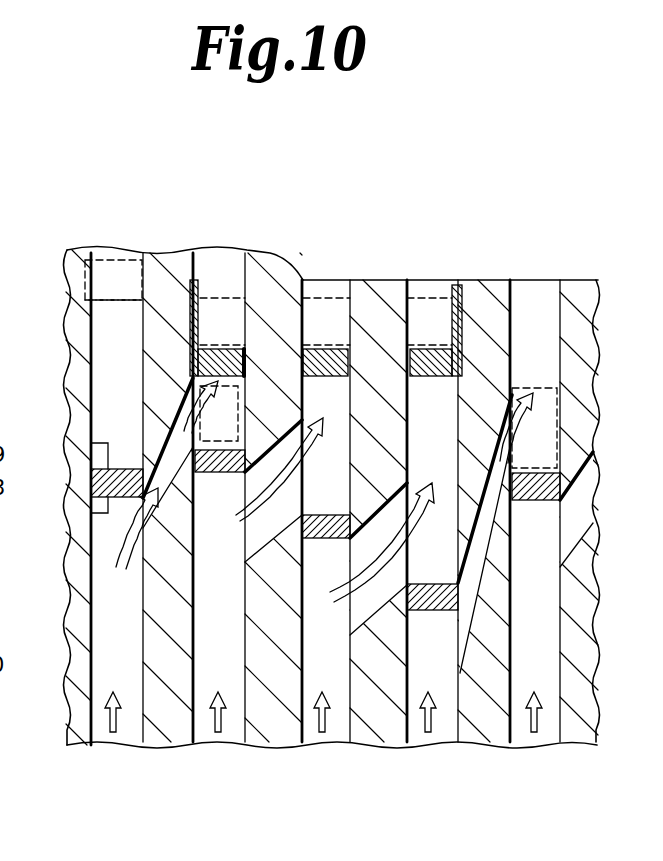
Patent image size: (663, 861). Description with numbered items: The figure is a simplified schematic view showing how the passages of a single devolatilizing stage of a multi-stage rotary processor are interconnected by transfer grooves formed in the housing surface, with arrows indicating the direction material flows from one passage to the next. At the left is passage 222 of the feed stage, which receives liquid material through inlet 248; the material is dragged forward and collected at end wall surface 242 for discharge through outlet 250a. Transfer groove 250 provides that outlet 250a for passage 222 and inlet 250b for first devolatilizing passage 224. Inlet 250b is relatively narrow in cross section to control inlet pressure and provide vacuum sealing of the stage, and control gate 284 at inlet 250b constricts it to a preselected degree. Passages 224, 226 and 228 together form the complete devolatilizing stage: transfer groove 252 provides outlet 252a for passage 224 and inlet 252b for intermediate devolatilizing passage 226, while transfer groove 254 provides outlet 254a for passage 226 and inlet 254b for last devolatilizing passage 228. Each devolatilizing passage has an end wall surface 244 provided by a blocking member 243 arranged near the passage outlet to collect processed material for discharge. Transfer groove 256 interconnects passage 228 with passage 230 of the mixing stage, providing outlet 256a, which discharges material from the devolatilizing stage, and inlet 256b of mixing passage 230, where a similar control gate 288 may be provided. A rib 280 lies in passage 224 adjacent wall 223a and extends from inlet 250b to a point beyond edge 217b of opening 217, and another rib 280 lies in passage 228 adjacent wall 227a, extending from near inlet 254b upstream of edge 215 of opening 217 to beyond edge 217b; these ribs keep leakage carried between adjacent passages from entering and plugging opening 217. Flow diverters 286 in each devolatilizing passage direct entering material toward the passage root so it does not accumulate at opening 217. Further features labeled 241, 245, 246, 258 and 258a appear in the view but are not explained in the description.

The edge of opening 215 is at (370, 283).
The opening 217 is at (340, 296).
The edge of opening 217b is at (342, 345).
The passage of the feed stage 222 is at (126, 743).
The wall of passage 224 223a is at (245, 633).
The first devolatilizing passage 224 is at (225, 738).
The intermediate devolatilizing passage 226 is at (335, 740).
The wall of passage 228 227a is at (438, 473).
The last devolatilizing passage 228 is at (435, 740).
The mixing passage 230 is at (548, 737).
The valve seat shoulder 241 is at (90, 443).
The end wall surface 242 is at (90, 513).
The blocking member 243 is at (205, 474).
The end wall surface 244 is at (198, 476).
The open position of plug 245 is at (528, 473).
The valve plug 246 is at (543, 502).
The inlet 248 is at (85, 294).
The transfer groove 250 is at (145, 487).
The outlet 250a is at (143, 500).
The inlet 250b is at (186, 402).
The transfer groove 252 is at (292, 526).
The outlet 252a is at (246, 543).
The inlet 252b is at (296, 446).
The transfer groove 254 is at (393, 593).
The outlet 254a is at (349, 614).
The inlet 254b is at (407, 518).
The transfer groove 256 is at (477, 588).
The outlet 256a is at (453, 652).
The inlet 256b is at (507, 433).
The outlet passage 258 is at (587, 502).
The outlet passage inlet 258a is at (562, 530).
The rib 280 is at (199, 283).
The control gate 284 is at (225, 347).
The flow diverter 286 is at (303, 358).
The control gate 288 is at (550, 387).